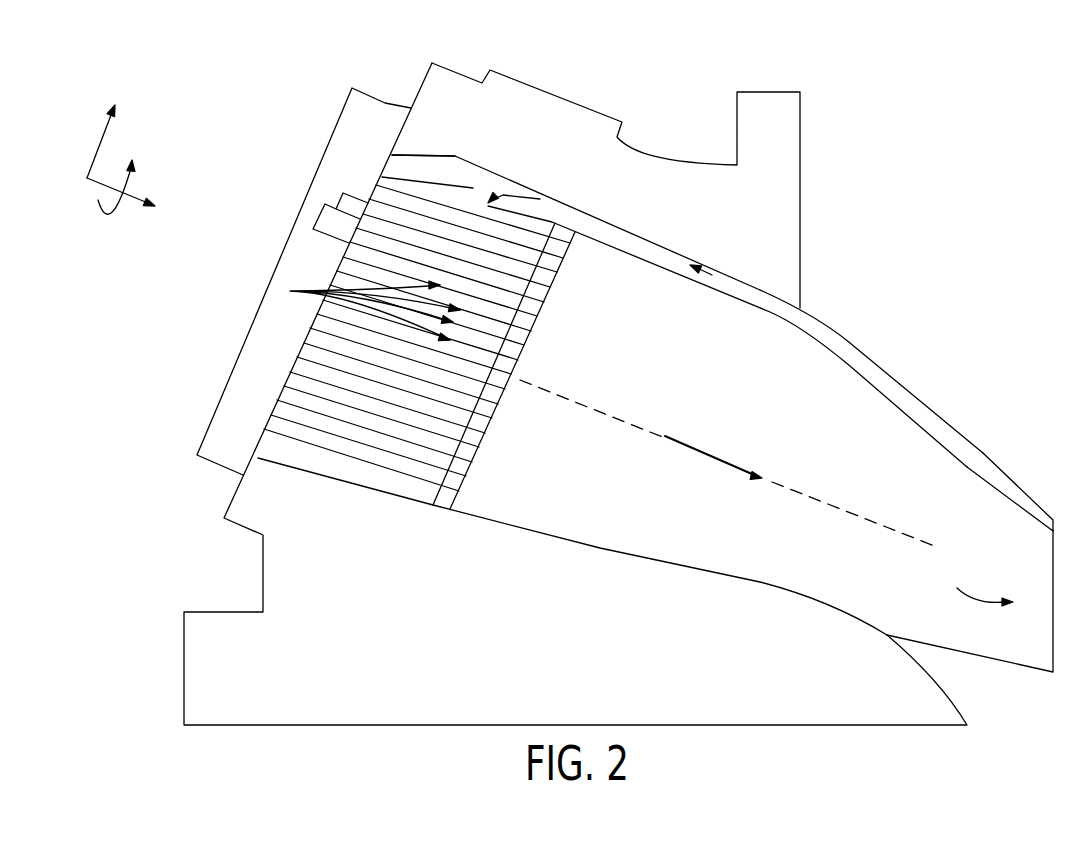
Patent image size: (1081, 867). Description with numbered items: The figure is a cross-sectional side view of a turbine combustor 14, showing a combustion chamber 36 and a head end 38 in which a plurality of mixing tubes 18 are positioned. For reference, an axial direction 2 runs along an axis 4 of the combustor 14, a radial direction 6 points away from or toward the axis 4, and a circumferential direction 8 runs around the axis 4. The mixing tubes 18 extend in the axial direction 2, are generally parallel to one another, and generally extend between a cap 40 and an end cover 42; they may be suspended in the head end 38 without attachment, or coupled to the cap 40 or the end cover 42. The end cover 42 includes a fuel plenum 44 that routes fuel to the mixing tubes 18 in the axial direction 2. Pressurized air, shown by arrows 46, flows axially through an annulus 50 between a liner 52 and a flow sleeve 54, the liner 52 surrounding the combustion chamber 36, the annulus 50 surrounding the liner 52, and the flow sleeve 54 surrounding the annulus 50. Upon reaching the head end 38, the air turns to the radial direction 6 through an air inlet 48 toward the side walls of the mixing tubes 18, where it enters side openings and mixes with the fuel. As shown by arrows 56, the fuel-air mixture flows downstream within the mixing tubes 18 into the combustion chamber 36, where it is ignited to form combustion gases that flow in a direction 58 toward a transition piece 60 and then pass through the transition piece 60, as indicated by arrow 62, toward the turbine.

The axial direction 2 is at (93, 182).
The axis 4 is at (855, 514).
The radial direction 6 is at (100, 143).
The circumferential direction 8 is at (122, 205).
The combustor 14 is at (988, 223).
The mixing tubes 18 is at (443, 192).
The combustion chamber 36 is at (622, 382).
The head end 38 is at (543, 50).
The cap 40 is at (558, 270).
The end cover 42 is at (385, 104).
The fuel plenum 44 is at (333, 214).
The arrow indicating pressurized air flow 46 is at (530, 192).
The air inlet 48 is at (486, 190).
The annulus 50 is at (816, 330).
The liner 52 is at (777, 322).
The flow sleeve 54 is at (843, 337).
The arrows indicating fuel-air mixture flow 56 is at (290, 291).
The direction of combustion gas flow 58 is at (712, 460).
The transition piece 60 is at (968, 467).
The arrow indicating combustion gas flow through transition piece 62 is at (978, 598).